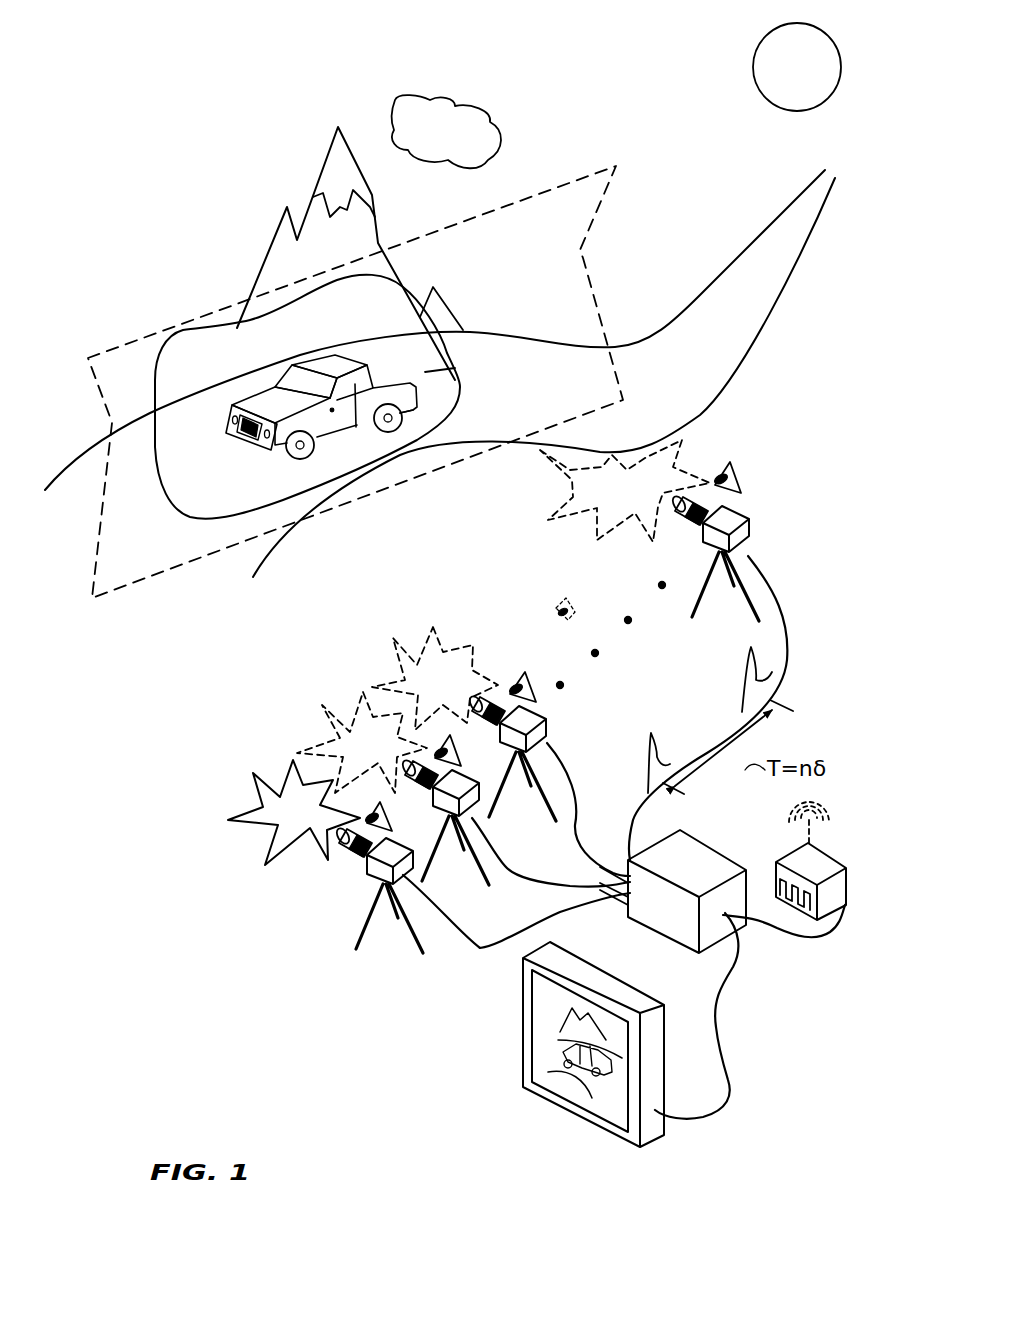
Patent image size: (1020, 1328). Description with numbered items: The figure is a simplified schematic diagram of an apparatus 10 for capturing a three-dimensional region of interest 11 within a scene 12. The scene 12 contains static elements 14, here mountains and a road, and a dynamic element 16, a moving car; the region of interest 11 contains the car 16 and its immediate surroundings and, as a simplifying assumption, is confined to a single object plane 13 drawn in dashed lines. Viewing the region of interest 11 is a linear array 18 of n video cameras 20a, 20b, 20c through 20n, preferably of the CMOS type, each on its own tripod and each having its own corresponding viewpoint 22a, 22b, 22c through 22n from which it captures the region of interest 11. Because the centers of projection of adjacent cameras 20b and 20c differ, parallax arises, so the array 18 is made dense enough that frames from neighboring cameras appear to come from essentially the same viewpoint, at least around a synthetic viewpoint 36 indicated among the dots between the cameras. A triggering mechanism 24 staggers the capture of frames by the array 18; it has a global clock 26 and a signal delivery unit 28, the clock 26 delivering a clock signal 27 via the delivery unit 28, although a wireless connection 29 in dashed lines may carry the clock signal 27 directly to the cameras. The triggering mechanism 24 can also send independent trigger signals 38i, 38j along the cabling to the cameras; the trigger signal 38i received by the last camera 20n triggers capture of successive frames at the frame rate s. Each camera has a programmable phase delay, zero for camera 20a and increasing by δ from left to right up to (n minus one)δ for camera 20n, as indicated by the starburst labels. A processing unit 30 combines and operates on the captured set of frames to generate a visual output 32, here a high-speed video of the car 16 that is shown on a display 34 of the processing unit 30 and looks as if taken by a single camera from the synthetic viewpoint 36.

The apparatus 10 is at (183, 773).
The region of interest 11 is at (165, 505).
The scene 12 is at (93, 119).
The object plane 13 is at (590, 168).
The static elements 14 is at (263, 256).
The dynamic element 16 is at (232, 437).
The array 18 is at (255, 890).
The video camera 20a is at (365, 880).
The video camera 20b is at (468, 870).
The video camera 20c is at (548, 722).
The video camera 20n is at (752, 540).
The viewpoint 22a is at (390, 805).
The viewpoint 22b is at (456, 740).
The viewpoint 22c is at (530, 678).
The viewpoint 22n is at (740, 470).
The triggering mechanism 24 is at (783, 992).
The global clock 26 is at (804, 891).
The clock signal 27 is at (777, 887).
The signal delivery unit 28 is at (700, 833).
The wireless connection 29 is at (816, 840).
The processing unit 30 is at (550, 1064).
The visual output 32 is at (492, 1093).
The display 34 is at (608, 1128).
The synthetic viewpoint 36 is at (571, 603).
The trigger signal 38i is at (768, 668).
The trigger signal 38j is at (645, 748).